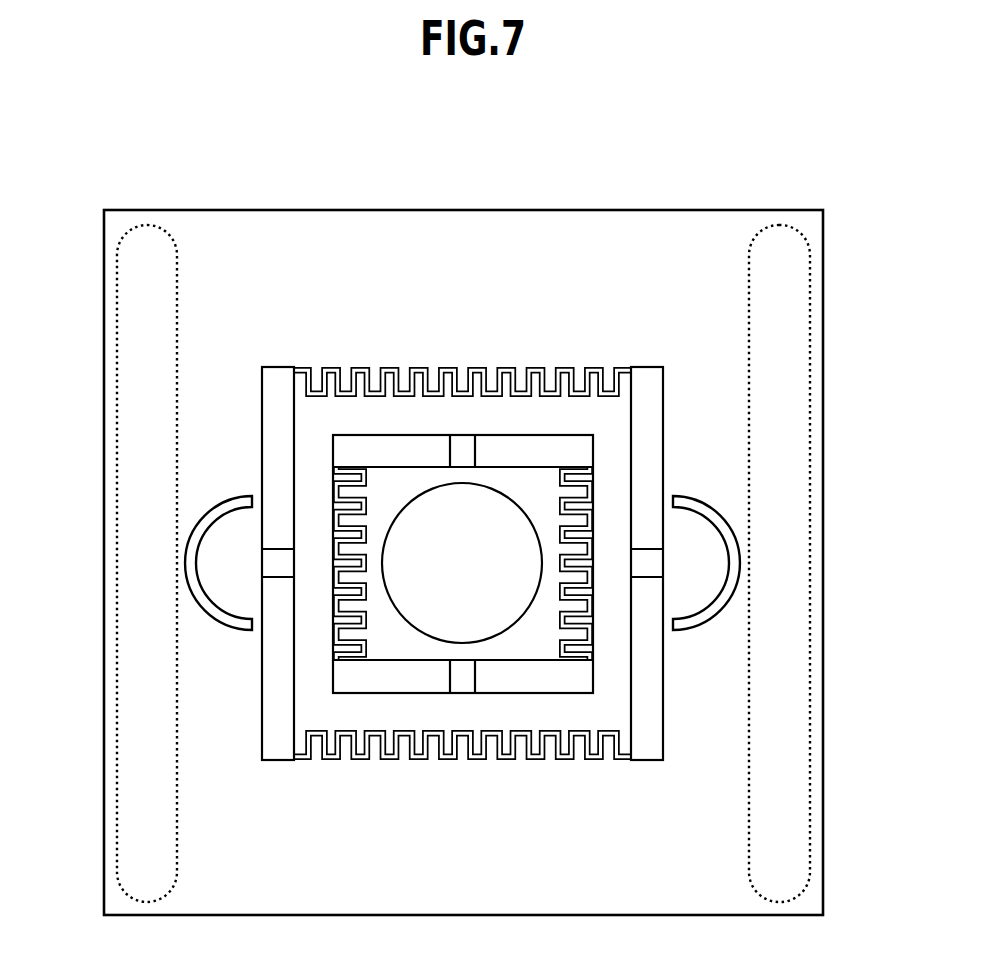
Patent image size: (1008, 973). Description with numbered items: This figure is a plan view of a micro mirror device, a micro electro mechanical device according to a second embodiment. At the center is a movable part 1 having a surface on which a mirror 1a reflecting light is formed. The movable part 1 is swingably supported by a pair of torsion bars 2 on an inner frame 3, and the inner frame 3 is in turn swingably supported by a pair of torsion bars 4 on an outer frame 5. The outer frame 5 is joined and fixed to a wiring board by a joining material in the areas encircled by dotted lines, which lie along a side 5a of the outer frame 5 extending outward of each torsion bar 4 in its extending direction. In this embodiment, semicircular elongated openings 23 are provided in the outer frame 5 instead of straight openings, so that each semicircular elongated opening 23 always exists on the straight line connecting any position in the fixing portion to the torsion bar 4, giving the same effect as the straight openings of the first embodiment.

The movable part 1 is at (397, 487).
The mirror 1a is at (428, 627).
The torsion bar 2 is at (480, 450).
The inner frame 3 is at (598, 700).
The torsion bar 4 is at (647, 577).
The outer frame 5 is at (773, 528).
The side of the outer frame 5a is at (823, 440).
The semicircular elongated opening 23 is at (221, 504).